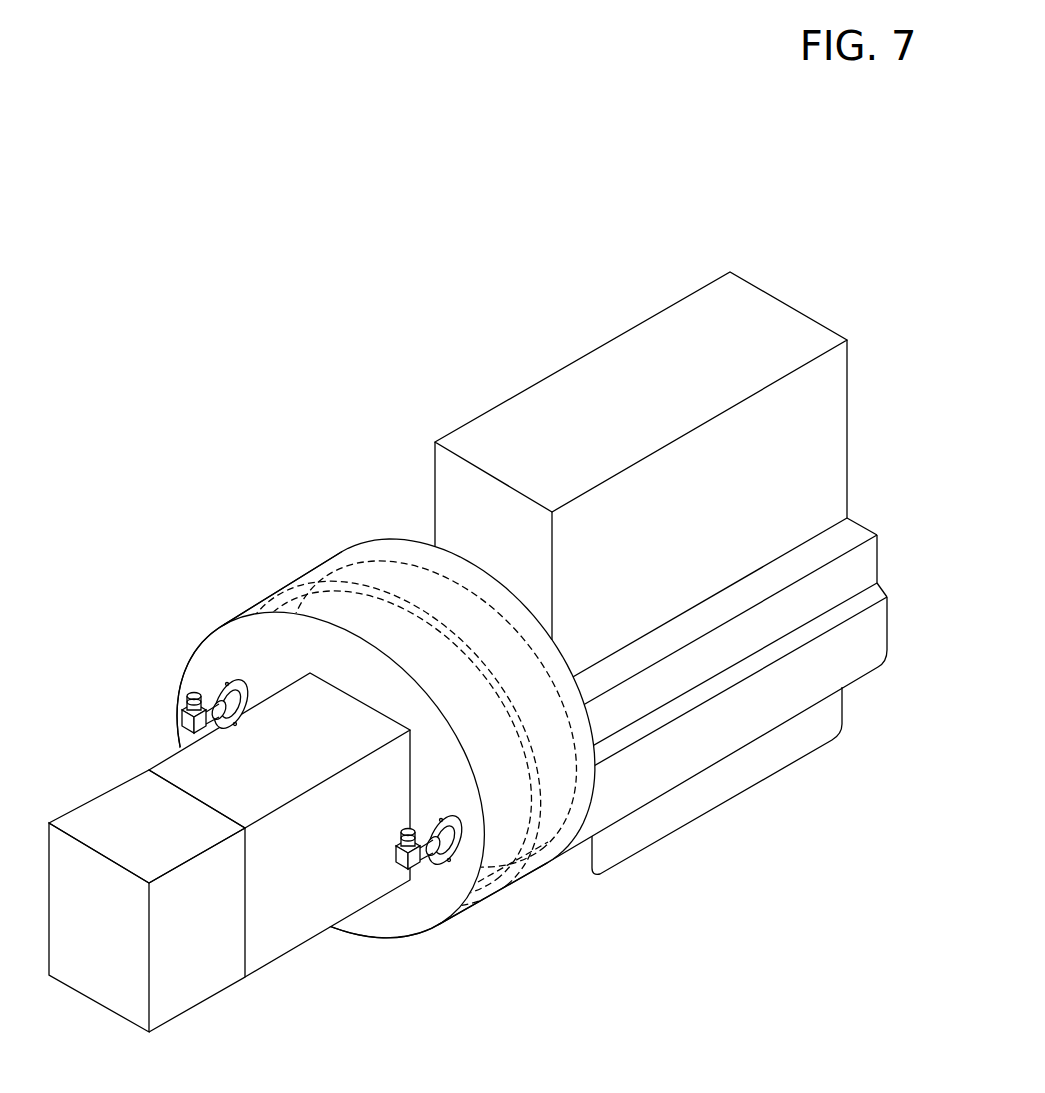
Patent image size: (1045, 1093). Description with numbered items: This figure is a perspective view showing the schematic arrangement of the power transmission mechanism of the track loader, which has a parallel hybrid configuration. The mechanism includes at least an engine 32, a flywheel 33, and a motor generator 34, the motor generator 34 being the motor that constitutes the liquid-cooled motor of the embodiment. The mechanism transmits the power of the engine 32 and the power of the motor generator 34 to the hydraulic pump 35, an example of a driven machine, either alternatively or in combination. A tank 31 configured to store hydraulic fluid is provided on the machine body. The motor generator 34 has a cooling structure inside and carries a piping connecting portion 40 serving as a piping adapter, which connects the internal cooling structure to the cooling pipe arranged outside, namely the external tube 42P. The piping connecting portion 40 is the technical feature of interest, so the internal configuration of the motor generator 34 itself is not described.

The tank 31 is at (203, 960).
The engine 32 is at (700, 735).
The flywheel 33 is at (555, 813).
The motor generator 34 is at (497, 847).
The hydraulic pump 35 is at (308, 915).
The piping connecting portion 40 is at (443, 845).
The external tube 42P is at (403, 862).